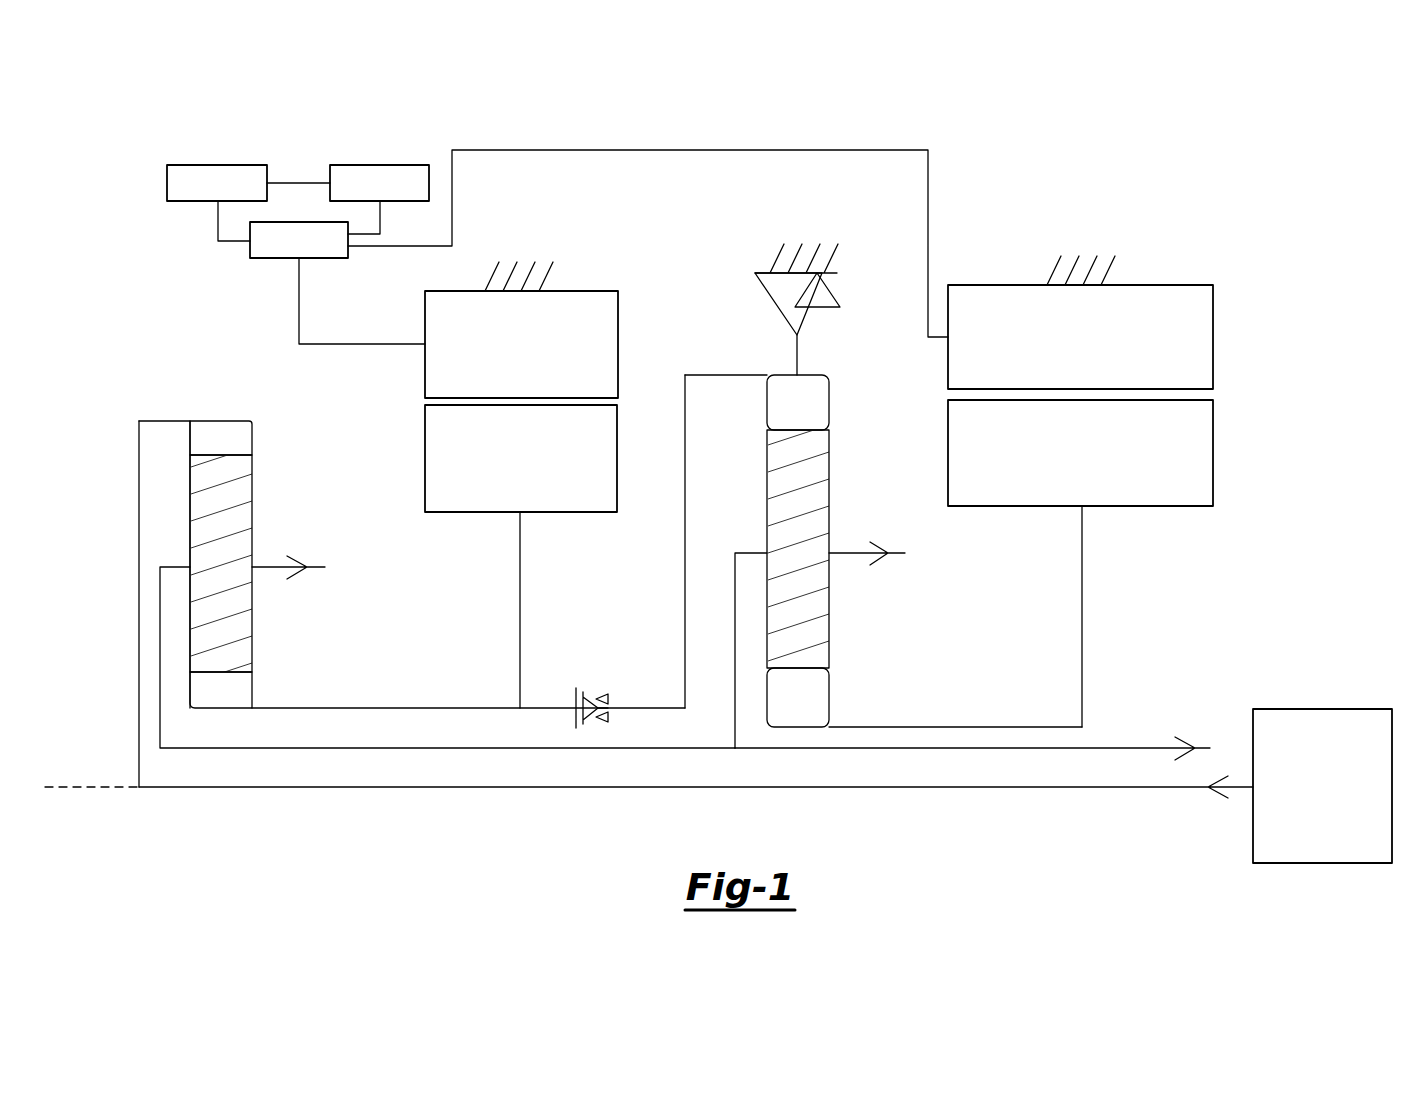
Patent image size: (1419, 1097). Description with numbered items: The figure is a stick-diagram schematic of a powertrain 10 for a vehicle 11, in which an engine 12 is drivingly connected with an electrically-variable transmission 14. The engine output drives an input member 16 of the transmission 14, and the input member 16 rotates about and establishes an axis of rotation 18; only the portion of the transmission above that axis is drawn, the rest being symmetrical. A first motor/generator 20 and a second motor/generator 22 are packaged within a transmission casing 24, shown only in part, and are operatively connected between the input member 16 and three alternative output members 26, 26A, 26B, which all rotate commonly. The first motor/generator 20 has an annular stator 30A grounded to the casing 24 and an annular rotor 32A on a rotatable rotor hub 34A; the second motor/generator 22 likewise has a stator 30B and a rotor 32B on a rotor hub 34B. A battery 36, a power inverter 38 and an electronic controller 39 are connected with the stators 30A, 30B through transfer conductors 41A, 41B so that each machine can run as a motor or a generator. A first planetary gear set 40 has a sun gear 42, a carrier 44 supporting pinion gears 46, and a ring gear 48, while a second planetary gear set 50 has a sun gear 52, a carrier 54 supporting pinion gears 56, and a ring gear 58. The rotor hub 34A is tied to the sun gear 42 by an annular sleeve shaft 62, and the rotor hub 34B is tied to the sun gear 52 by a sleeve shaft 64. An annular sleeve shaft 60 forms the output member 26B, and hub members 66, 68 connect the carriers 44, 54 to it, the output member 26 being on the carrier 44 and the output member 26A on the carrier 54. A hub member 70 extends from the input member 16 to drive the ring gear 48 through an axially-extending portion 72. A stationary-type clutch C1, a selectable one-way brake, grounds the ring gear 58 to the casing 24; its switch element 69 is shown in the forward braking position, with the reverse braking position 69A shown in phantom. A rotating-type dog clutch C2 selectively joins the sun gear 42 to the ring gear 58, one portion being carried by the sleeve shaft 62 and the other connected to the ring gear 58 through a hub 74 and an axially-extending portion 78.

The powertrain 10 is at (1060, 172).
The vehicle 11 is at (1144, 190).
The engine 12 is at (1336, 821).
The electrically-variable transmission 14 is at (156, 310).
The input member 16 is at (1165, 790).
The axis of rotation 18 is at (93, 795).
The first motor/generator 20 is at (559, 370).
The second motor/generator 22 is at (1131, 395).
The transmission casing 24 is at (485, 275).
The transmission output member 26 is at (272, 567).
The transmission output member 26A is at (850, 553).
The transmission output member 26B is at (1133, 748).
The stator 30A is at (535, 358).
The stator 30B is at (1095, 351).
The rotor 32A is at (535, 492).
The rotor 32B is at (1095, 483).
The rotor hub 34A is at (520, 634).
The rotor hub 34B is at (1082, 578).
The battery 36 is at (218, 165).
The power inverter 38 is at (250, 250).
The electronic controller 39 is at (380, 165).
The first planetary gear set 40 is at (284, 542).
The sun gear 42 is at (252, 692).
The carrier 44 is at (178, 567).
The pinion gears 46 is at (240, 632).
The ring gear 48 is at (255, 437).
The second planetary gear set 50 is at (862, 551).
The sun gear 52 is at (829, 698).
The carrier 54 is at (752, 553).
The pinion gears 56 is at (829, 593).
The ring gear 58 is at (829, 403).
The annular sleeve shaft 60 is at (575, 750).
The annular sleeve shaft 62 is at (450, 708).
The sleeve shaft 64 is at (1020, 727).
The hub member 66 is at (160, 632).
The hub member 68 is at (735, 622).
The switch element 69 is at (790, 320).
The reverse braking position 69A is at (805, 320).
The hub member 70 is at (139, 517).
The axially-extending portion 72 is at (160, 421).
The hub 74 is at (685, 545).
The axially-extending portion 78 is at (700, 375).
The transfer conductor 41A is at (358, 344).
The transfer conductor 41B is at (928, 183).
The stationary-type clutch C1 is at (864, 298).
The rotating-type clutch C2 is at (590, 682).